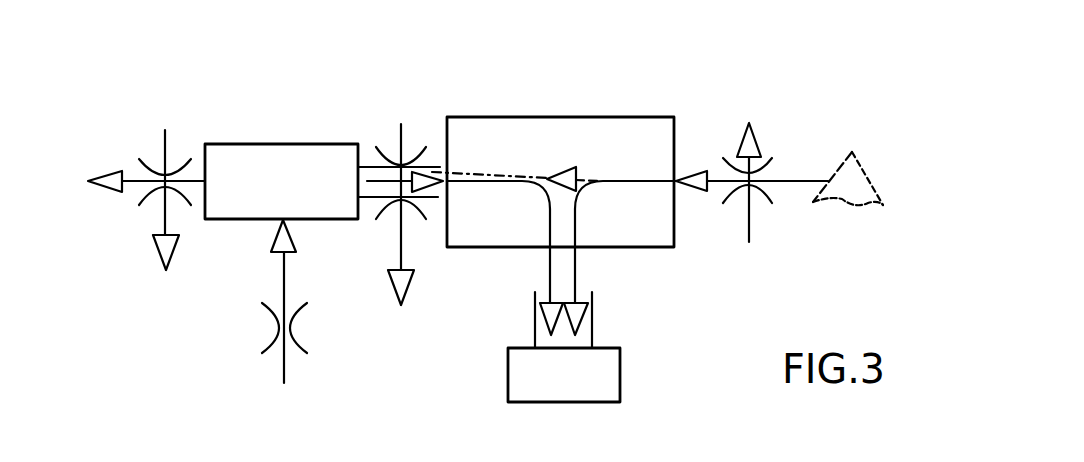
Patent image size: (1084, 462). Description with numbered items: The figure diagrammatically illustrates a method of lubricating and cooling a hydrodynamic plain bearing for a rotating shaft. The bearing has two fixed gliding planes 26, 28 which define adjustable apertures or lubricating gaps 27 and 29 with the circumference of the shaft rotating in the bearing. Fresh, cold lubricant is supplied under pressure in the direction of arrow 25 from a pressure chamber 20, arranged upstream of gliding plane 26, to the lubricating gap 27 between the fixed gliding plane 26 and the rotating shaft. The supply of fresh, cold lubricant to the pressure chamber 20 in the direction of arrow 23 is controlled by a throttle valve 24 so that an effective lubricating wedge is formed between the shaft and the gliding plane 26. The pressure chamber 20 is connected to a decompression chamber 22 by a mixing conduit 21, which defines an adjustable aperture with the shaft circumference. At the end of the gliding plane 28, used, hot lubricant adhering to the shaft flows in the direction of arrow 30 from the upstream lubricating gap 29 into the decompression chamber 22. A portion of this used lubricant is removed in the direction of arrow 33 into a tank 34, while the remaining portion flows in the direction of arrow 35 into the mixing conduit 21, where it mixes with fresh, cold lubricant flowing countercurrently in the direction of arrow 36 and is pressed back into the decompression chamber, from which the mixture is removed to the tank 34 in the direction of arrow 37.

The pressure chamber 20 is at (277, 144).
The mixing conduit 21 is at (435, 202).
The decompression chamber 22 is at (587, 117).
The arrow 23 is at (283, 370).
The throttle valve 24 is at (280, 330).
The arrow 25 is at (134, 178).
The fixed gliding plane 26 is at (158, 168).
The lubricating gap 27 is at (175, 168).
The fixed gliding plane 28 is at (768, 157).
The lubricating gap 29 is at (772, 160).
The arrow 30 is at (803, 181).
The arrow 33 is at (583, 195).
The tank 34 is at (620, 375).
The arrow 35 is at (528, 177).
The arrow 36 is at (373, 182).
The arrow 37 is at (538, 193).